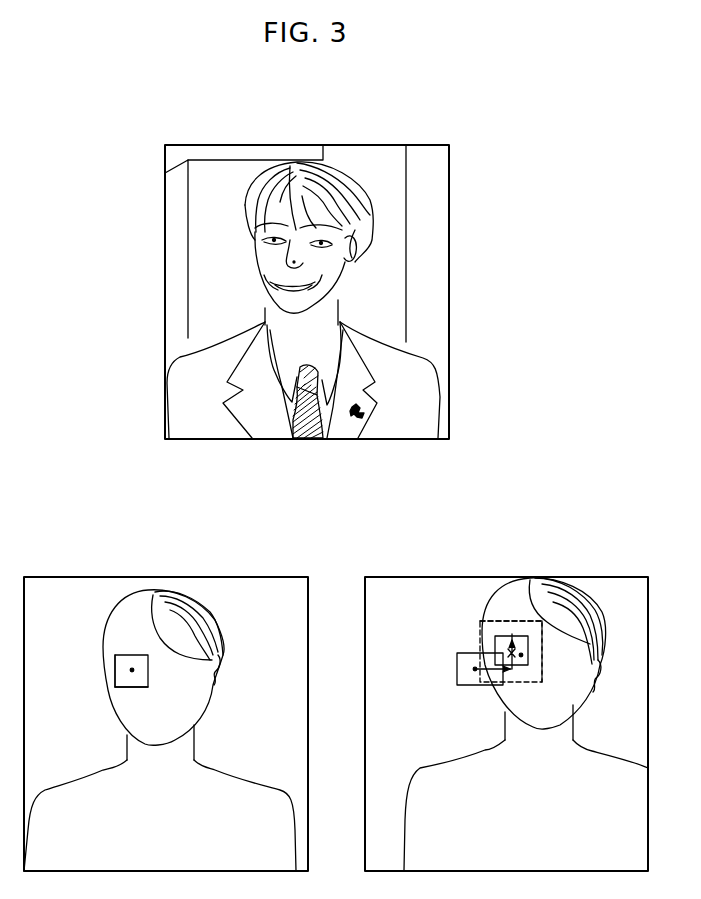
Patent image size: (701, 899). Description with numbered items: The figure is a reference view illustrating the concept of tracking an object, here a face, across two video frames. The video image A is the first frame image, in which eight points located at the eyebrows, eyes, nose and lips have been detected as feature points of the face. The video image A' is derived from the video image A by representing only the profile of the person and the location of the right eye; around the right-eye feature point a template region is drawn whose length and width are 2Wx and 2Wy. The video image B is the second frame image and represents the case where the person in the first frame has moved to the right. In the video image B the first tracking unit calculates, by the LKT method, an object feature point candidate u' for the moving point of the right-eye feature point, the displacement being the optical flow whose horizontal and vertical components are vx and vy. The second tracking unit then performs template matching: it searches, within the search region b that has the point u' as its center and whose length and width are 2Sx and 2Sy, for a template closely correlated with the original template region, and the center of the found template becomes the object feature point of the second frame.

The video image A is at (307, 271).
The video image A' is at (166, 704).
The video image B is at (496, 577).
The search region b is at (480, 621).
The object feature point candidate u' is at (519, 641).
The length of template region 2Wx is at (132, 699).
The width of template region 2Wy is at (96, 671).
The length of search region 2Sx is at (542, 620).
The width of search region 2Sy is at (550, 643).
The horizontal optical flow component vx is at (496, 674).
The vertical optical flow component vy is at (519, 655).